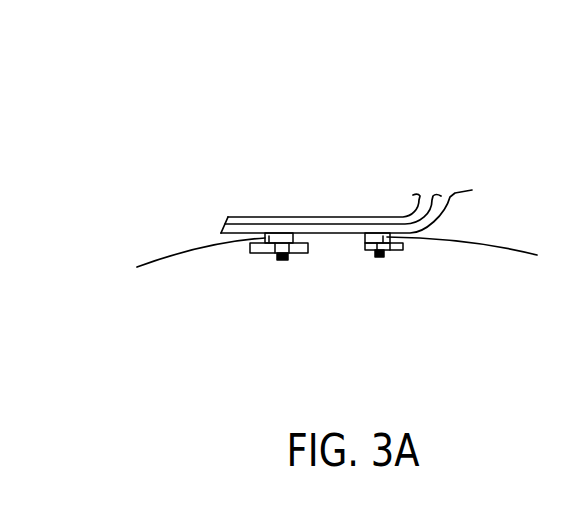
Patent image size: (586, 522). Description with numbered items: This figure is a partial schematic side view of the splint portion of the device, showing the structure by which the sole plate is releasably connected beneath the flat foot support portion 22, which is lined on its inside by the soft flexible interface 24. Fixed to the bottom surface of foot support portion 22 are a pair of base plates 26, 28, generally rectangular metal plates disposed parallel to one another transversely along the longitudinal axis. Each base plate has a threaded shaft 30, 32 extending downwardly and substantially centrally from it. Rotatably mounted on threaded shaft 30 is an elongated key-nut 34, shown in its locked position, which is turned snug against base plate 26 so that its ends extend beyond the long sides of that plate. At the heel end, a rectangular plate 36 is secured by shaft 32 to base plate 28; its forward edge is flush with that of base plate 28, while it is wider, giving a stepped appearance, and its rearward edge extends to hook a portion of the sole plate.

The foot support portion 22 is at (325, 232).
The interface 24 is at (355, 222).
The base plate 26 is at (173, 269).
The base plate 28 is at (477, 262).
The threaded shaft 30 is at (277, 258).
The threaded shaft 32 is at (379, 256).
The key-nut 34 is at (293, 253).
The rectangular plate 36 is at (403, 250).